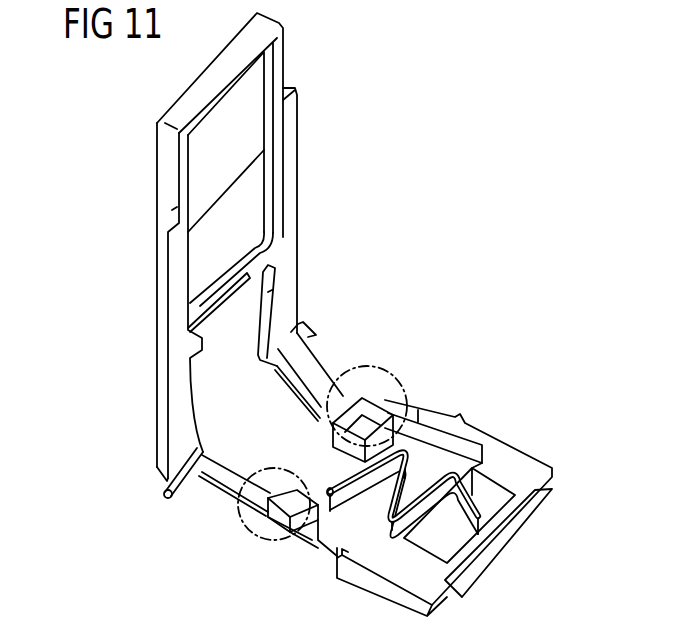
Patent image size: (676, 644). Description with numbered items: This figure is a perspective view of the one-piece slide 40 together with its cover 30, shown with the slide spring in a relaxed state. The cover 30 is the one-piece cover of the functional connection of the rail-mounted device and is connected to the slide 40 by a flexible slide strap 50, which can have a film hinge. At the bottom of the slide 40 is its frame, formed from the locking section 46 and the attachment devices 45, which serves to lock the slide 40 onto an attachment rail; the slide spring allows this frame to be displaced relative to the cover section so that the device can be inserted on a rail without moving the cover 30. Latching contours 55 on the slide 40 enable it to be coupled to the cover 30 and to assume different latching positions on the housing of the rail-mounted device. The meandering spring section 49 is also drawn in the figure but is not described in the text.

The cover 30 is at (163, 159).
The slide 40 is at (477, 289).
The attachment devices 45 is at (330, 562).
The locking section 46 is at (512, 535).
The meander spring section 49 is at (313, 427).
The flexible slide strap 50 is at (324, 386).
The latching contours 55 is at (300, 340).